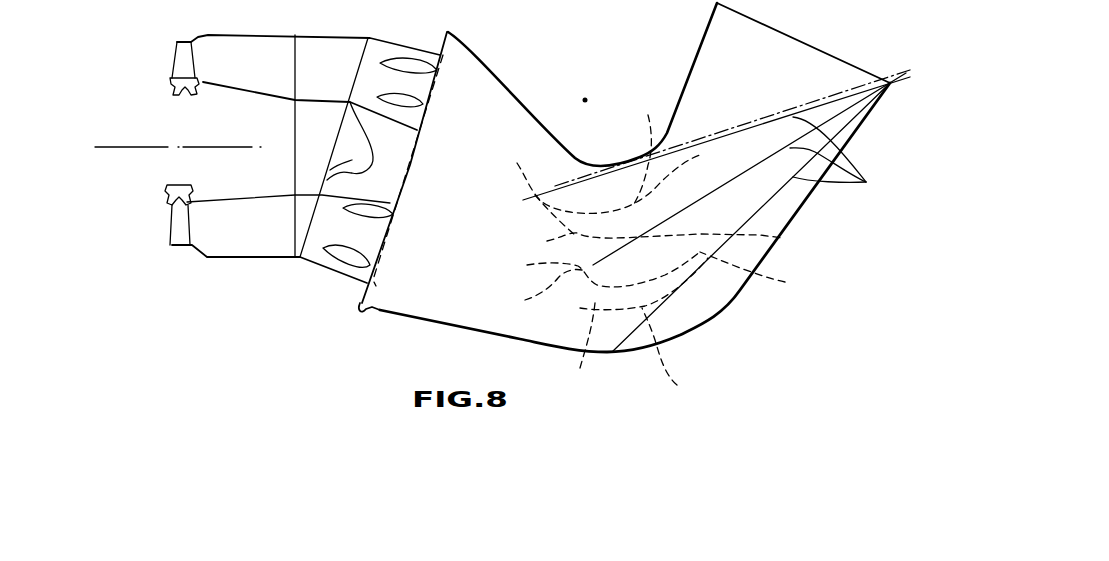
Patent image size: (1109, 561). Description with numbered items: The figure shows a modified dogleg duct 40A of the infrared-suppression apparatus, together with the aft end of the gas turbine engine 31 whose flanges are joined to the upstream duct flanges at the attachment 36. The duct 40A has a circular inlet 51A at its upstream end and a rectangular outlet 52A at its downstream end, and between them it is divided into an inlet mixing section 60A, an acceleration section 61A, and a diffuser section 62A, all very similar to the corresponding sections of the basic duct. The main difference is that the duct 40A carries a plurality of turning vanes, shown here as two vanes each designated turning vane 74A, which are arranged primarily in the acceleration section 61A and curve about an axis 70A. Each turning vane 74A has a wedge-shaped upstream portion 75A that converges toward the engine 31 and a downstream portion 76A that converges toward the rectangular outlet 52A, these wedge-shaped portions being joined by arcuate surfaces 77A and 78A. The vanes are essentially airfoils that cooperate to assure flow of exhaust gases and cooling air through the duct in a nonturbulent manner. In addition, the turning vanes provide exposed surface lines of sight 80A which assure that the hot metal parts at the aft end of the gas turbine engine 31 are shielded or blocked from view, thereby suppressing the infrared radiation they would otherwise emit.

The gas turbine engine 31 is at (203, 268).
The upstream flange attachment 36 is at (142, 145).
The dogleg duct 40A is at (532, 122).
The circular inlet 51A is at (358, 304).
The rectangular outlet 52A is at (832, 55).
The inlet mixing section 60A is at (478, 223).
The acceleration section 61A is at (634, 265).
The diffuser section 62A is at (722, 92).
The axis 70A is at (585, 100).
The turning vane 74A is at (642, 295).
The upstream portion 75A is at (587, 233).
The downstream portion 76A is at (766, 220).
The arcuate surface 77A is at (590, 189).
The arcuate surface 78A is at (783, 238).
The exposed surface line of sight 80A is at (853, 160).